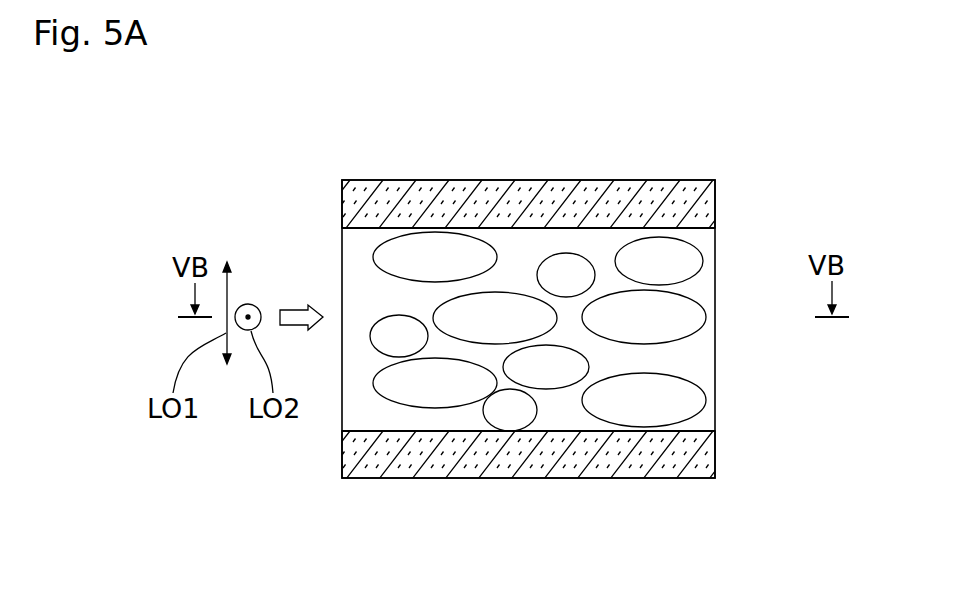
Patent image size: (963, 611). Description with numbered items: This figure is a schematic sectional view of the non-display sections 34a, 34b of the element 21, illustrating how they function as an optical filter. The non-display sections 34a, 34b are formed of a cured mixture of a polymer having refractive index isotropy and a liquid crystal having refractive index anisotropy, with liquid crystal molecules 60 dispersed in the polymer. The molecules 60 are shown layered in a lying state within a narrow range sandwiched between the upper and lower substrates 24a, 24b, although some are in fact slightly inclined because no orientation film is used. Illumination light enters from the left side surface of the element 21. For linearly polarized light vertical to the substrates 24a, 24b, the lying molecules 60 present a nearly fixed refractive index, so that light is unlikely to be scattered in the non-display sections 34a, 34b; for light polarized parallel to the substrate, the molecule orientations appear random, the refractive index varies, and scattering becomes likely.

The element 21 is at (671, 174).
The substrate 24a is at (566, 180).
The substrate 24b is at (582, 479).
The non-display section 34a is at (609, 289).
The non-display section 34b is at (743, 428).
The liquid crystal molecules 60 is at (693, 312).